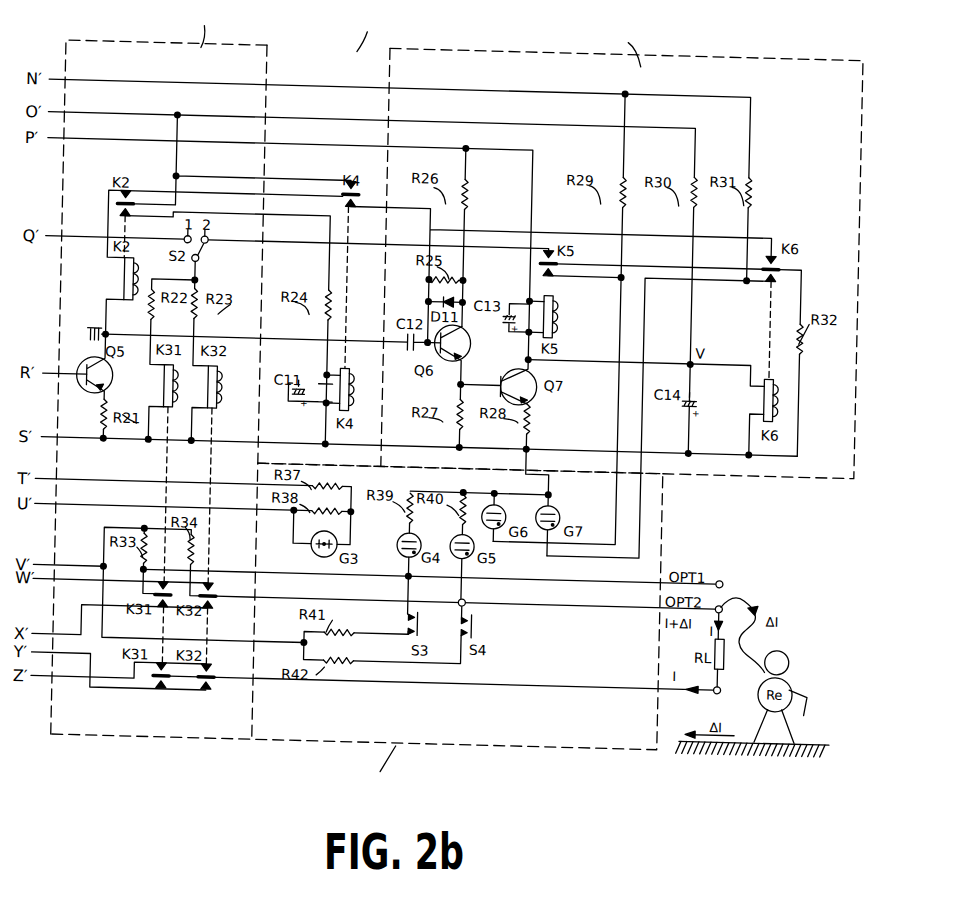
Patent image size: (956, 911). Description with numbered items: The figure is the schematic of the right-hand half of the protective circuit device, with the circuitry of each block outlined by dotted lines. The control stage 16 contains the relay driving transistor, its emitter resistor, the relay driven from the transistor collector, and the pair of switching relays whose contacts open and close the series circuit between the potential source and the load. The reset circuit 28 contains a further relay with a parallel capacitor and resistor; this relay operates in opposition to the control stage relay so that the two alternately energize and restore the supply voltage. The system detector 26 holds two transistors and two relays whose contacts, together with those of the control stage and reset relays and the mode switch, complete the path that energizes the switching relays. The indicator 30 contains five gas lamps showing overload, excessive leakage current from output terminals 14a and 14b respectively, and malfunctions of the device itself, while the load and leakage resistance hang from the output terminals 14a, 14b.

The control stage 16 is at (238, 46).
The reset circuit 28 is at (373, 46).
The system detector 26 is at (695, 54).
The indicator 30 is at (533, 735).
The output terminal 14a is at (733, 564).
The output terminal 14b is at (733, 590).